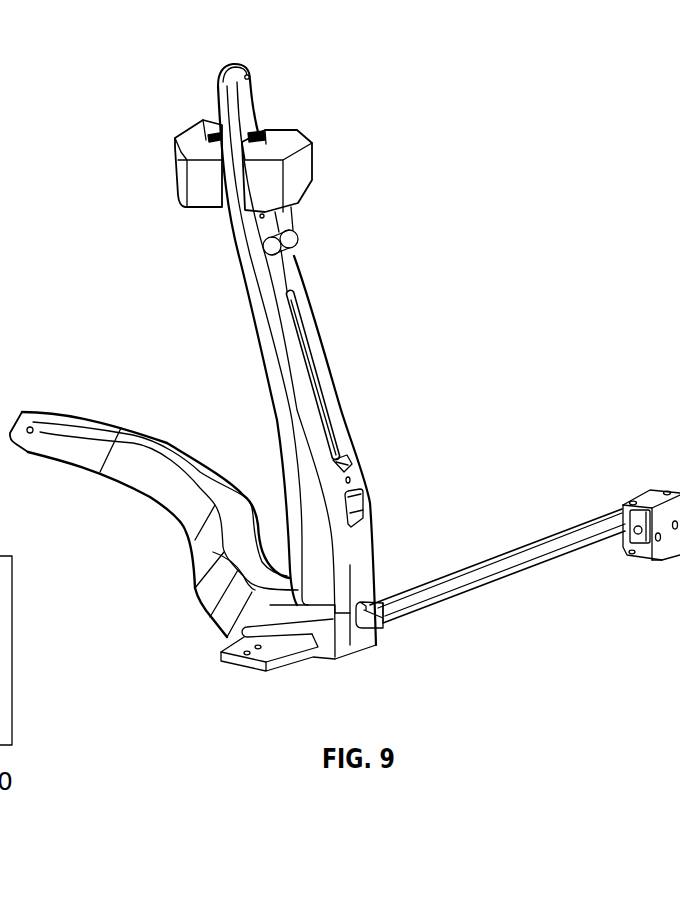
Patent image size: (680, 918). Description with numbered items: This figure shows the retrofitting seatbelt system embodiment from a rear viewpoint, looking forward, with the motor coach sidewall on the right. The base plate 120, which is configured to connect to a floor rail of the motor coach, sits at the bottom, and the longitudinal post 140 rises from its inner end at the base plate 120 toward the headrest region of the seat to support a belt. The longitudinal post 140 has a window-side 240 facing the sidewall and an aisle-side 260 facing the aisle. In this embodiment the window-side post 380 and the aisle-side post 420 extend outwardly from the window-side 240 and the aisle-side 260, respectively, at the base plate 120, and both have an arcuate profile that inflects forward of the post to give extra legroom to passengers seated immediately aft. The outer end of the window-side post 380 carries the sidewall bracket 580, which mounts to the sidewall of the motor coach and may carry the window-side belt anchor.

The base plate 120 is at (345, 639).
The longitudinal post 140 is at (320, 466).
The window-side 240 is at (293, 307).
The aisle-side 260 is at (237, 280).
The window-side post 380 is at (497, 550).
The aisle-side post 420 is at (115, 418).
The sidewall bracket 580 is at (679, 540).